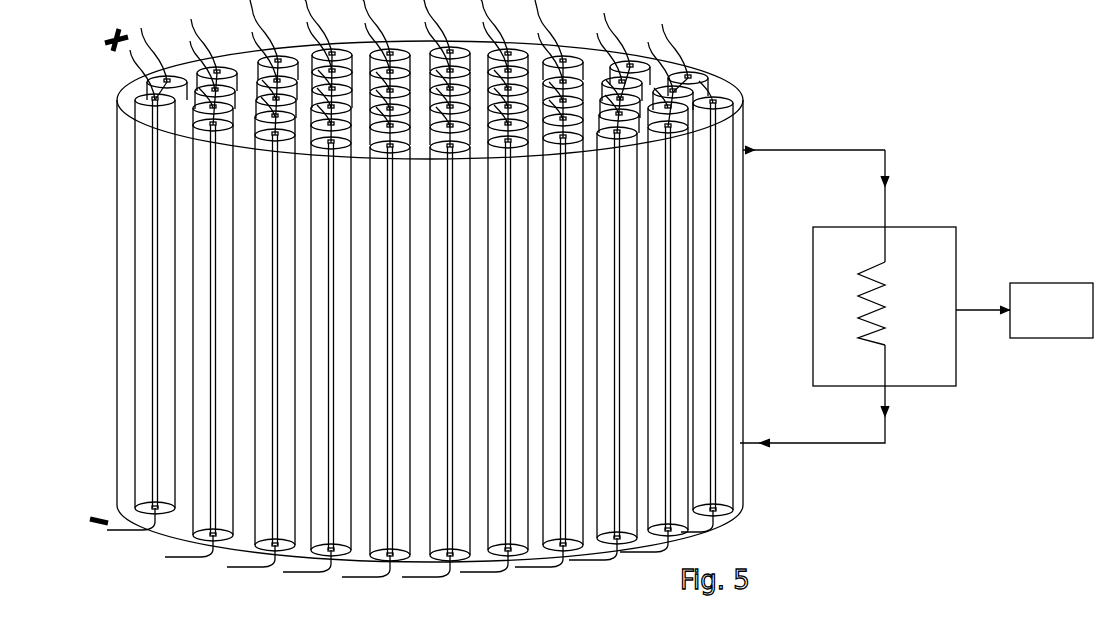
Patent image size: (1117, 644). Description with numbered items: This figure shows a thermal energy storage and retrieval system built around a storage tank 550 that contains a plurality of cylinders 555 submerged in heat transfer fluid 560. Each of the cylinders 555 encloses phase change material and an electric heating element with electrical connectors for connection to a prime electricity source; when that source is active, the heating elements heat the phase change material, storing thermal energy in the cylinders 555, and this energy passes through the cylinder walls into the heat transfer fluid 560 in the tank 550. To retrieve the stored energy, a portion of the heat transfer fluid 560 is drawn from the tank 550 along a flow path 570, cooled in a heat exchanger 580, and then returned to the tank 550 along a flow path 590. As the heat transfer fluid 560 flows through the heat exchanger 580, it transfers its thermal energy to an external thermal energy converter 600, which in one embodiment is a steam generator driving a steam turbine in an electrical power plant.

The storage tank 550 is at (117, 262).
The cylinders 555 is at (140, 88).
The heat transfer fluid 560 is at (738, 129).
The flow path 570 is at (853, 149).
The heat exchanger 580 is at (945, 227).
The flow path 590 is at (875, 443).
The thermal energy converter 600 is at (1040, 283).